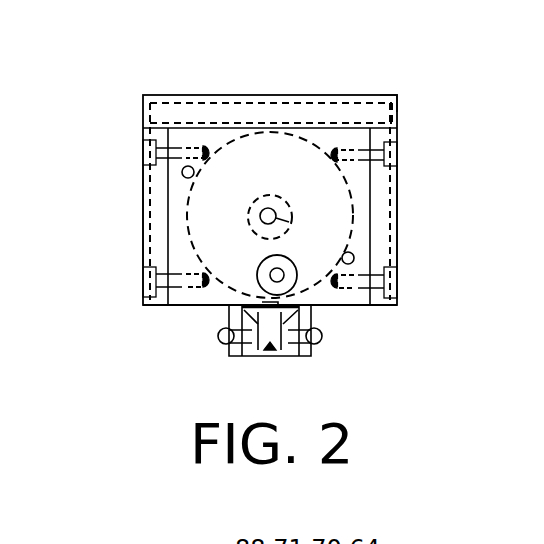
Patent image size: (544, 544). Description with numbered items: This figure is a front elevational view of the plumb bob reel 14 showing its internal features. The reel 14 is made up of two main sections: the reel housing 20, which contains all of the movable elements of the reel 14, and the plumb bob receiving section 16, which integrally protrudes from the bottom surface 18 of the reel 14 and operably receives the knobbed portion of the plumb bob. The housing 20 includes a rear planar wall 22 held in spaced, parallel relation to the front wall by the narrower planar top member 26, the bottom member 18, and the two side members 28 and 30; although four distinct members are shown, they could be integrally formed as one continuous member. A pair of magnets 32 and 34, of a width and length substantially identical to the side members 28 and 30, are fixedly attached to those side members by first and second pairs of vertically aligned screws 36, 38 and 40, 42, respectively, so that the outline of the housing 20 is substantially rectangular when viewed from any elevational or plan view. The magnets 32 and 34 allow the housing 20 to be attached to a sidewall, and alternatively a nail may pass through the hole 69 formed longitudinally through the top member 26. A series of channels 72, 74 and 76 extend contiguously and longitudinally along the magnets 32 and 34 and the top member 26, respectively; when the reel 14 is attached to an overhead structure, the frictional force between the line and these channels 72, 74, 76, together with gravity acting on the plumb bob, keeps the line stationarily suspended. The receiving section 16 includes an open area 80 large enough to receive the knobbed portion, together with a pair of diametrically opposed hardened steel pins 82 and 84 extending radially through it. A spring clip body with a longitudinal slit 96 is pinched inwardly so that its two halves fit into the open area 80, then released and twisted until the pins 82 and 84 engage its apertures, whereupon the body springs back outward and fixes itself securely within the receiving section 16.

The reel 14 is at (122, 102).
The top member 26 is at (298, 95).
The channel 76 is at (203, 103).
The reel housing 20 is at (398, 97).
The hole 69 is at (394, 114).
The channel 72 is at (150, 188).
The channel 74 is at (397, 188).
The side member 28 is at (168, 222).
The side member 30 is at (370, 210).
The magnet 32 is at (150, 241).
The magnet 34 is at (383, 240).
The screw 36 is at (147, 153).
The screw 40 is at (397, 153).
The screw 38 is at (150, 282).
The screw 42 is at (390, 279).
The rear planar wall 22 is at (181, 298).
The bottom surface 18 is at (348, 305).
The plumb bob receiving section 16 is at (308, 356).
The hardened steel pin 82 is at (224, 336).
The hardened steel pin 84 is at (318, 339).
The open area 80 is at (252, 355).
The slit 96 is at (270, 353).